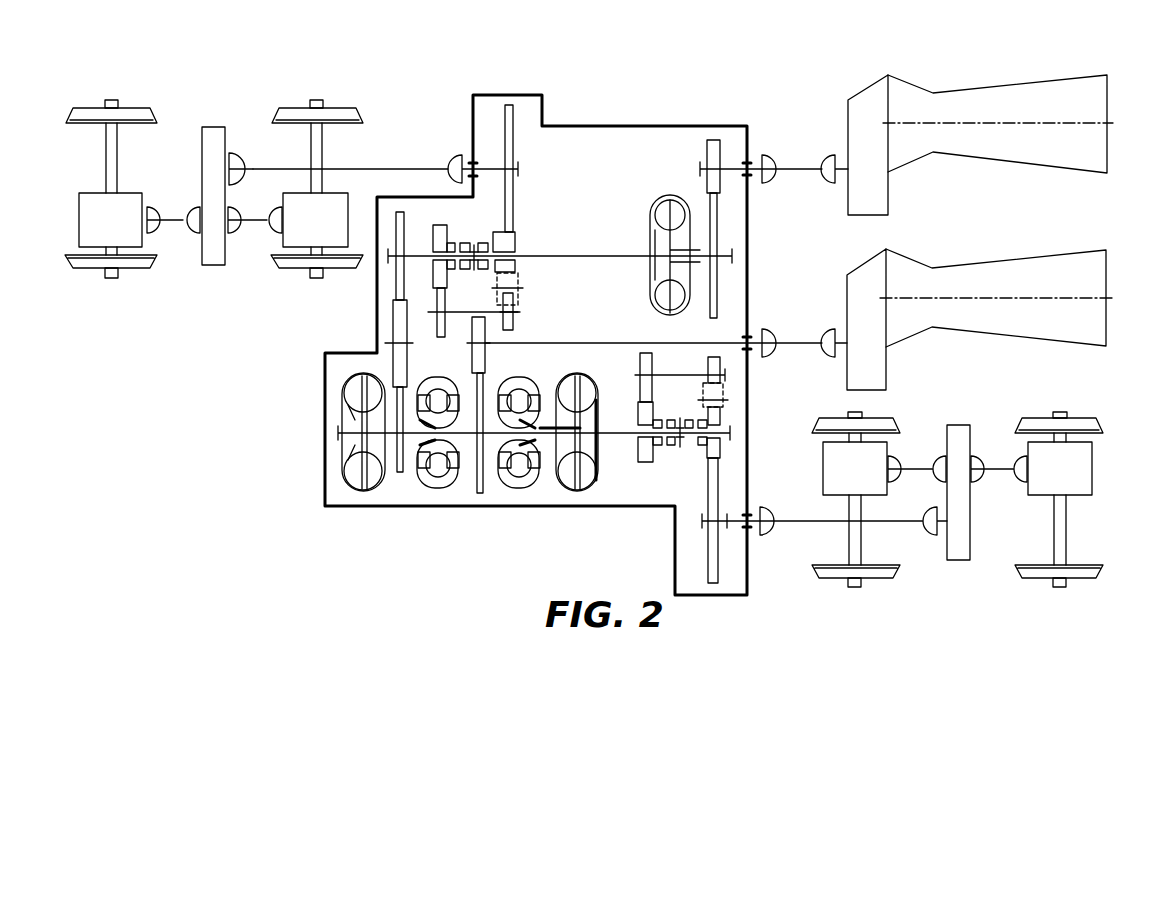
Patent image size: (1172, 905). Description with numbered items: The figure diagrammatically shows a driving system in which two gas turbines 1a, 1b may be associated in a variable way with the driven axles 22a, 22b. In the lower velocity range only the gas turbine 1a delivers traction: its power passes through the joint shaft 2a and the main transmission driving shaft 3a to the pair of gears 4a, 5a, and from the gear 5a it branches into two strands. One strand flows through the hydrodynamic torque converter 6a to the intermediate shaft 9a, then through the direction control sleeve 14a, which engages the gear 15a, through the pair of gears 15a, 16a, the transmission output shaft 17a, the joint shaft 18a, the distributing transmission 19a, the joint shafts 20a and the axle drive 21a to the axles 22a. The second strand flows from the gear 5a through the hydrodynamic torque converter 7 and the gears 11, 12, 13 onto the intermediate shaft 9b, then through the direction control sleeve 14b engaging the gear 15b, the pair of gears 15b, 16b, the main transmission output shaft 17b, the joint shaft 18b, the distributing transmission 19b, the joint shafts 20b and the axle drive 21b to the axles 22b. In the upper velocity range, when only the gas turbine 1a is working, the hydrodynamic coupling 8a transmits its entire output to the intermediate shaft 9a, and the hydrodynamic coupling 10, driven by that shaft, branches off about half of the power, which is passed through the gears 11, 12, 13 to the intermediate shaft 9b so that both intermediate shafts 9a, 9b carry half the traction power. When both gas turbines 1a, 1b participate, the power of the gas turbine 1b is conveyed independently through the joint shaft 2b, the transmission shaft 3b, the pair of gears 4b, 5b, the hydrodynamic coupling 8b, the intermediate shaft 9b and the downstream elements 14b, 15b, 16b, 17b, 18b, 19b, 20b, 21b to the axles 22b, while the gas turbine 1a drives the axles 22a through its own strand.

The gas turbine 1a is at (963, 278).
The gas turbine 1b is at (966, 108).
The joint shaft 2a is at (792, 343).
The joint shaft 2b is at (798, 168).
The main transmission driving shaft 3a is at (570, 343).
The transmission shaft 3b is at (735, 168).
The gear 4a is at (485, 358).
The gear 4b is at (713, 150).
The gear 5a is at (480, 493).
The gear 5b is at (712, 213).
The hydrodynamic torque converter 6a is at (520, 472).
The hydrodynamic torque converter 7 is at (437, 468).
The hydrodynamic coupling 8a is at (570, 475).
The hydrodynamic coupling 8b is at (652, 223).
The intermediate shaft 9a is at (622, 433).
The intermediate shaft 9b is at (555, 256).
The hydrodynamic coupling 10 is at (373, 477).
The gear 11 is at (400, 472).
The gear 12 is at (400, 317).
The gear 13 is at (402, 215).
The direction control sleeve 14a is at (688, 445).
The direction control sleeve 14b is at (467, 247).
The gear 15a is at (717, 423).
The gear 15b is at (512, 243).
The gear 16a is at (713, 475).
The gear 16b is at (505, 125).
The transmission output shaft 17a is at (727, 520).
The main transmission output shaft 17b is at (467, 162).
The joint shaft 18a is at (808, 524).
The joint shaft 18b is at (267, 167).
The distributing transmission 19a is at (963, 442).
The distributing transmission 19b is at (212, 135).
The joint shafts 20a is at (992, 468).
The joint shafts 20b is at (250, 222).
The axle drive 21a is at (1080, 455).
The axle drive 21b is at (300, 232).
The axles 22a is at (1065, 550).
The axles 22b is at (316, 108).